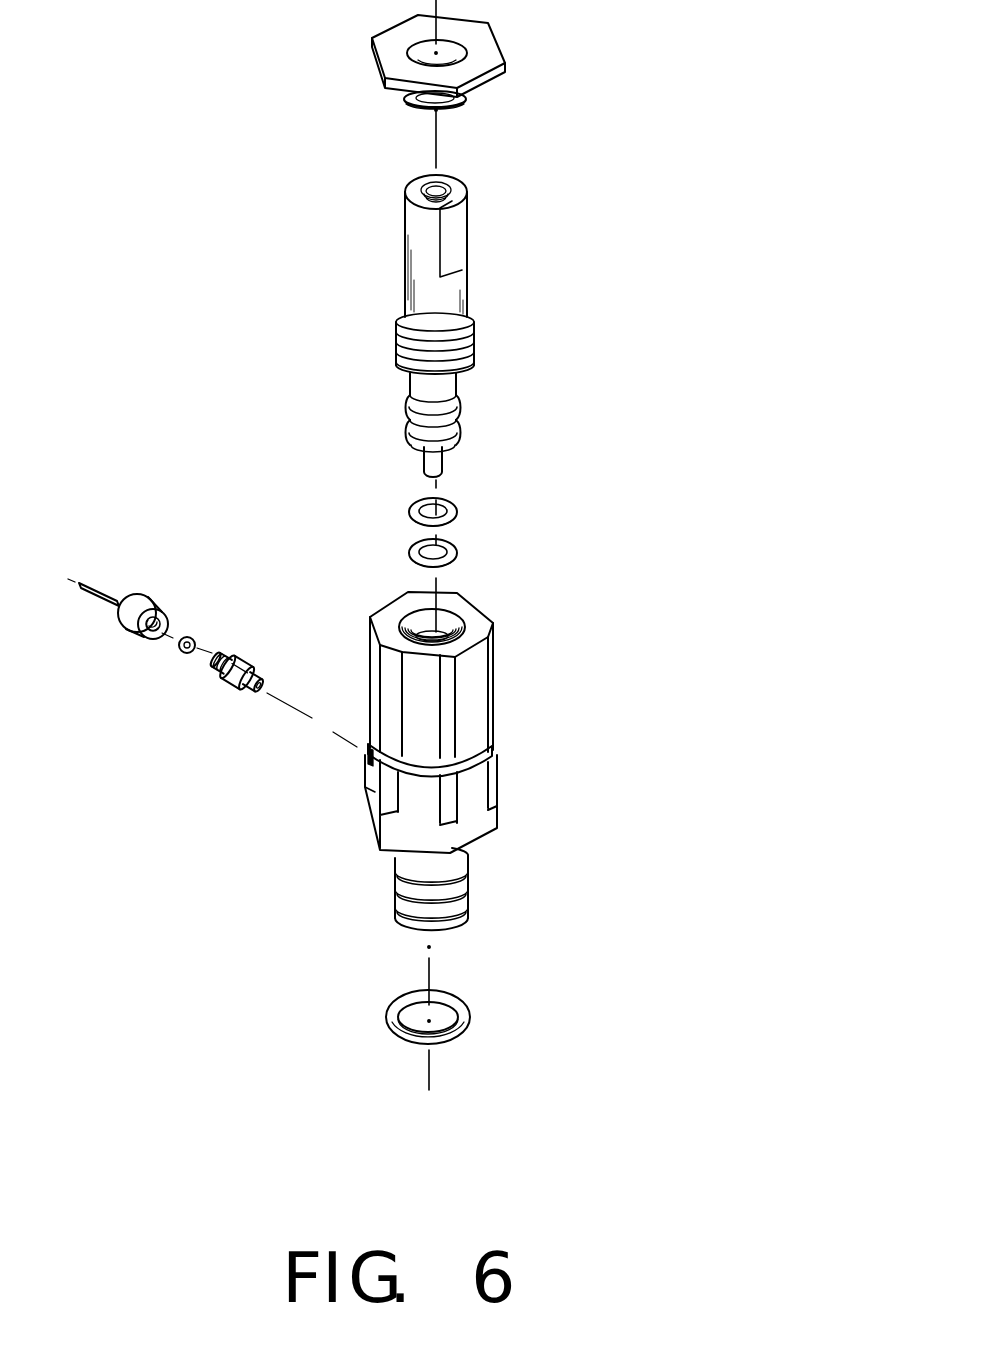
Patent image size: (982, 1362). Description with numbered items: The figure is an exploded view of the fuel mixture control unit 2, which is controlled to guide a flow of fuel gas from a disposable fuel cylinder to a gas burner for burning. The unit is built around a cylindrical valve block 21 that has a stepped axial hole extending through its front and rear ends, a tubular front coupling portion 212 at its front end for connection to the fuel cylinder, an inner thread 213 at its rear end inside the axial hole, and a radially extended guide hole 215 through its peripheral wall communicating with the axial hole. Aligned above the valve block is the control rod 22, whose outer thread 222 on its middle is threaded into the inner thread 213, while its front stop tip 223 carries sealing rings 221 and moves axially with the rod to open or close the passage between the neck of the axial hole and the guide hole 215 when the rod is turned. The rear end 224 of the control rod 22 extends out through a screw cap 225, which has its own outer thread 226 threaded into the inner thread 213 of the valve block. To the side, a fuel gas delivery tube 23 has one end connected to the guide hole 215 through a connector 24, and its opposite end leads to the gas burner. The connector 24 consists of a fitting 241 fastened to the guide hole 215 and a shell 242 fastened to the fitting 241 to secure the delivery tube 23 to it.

The fuel mixture control unit 2 is at (506, 654).
The cylindrical valve block 21 is at (468, 717).
The tubular front coupling portion 212 is at (458, 897).
The inner thread 213 is at (445, 627).
The radially extended guide hole 215 is at (360, 778).
The control rod 22 is at (445, 308).
The sealing rings 221 is at (458, 555).
The outer thread 222 is at (475, 342).
The front stop tip 223 is at (438, 462).
The rear end 224 is at (453, 222).
The screw cap 225 is at (482, 50).
The outer thread 226 is at (447, 107).
The fuel gas delivery tube 23 is at (98, 585).
The connector 24 is at (217, 614).
The fitting 241 is at (230, 692).
The shell 242 is at (128, 625).